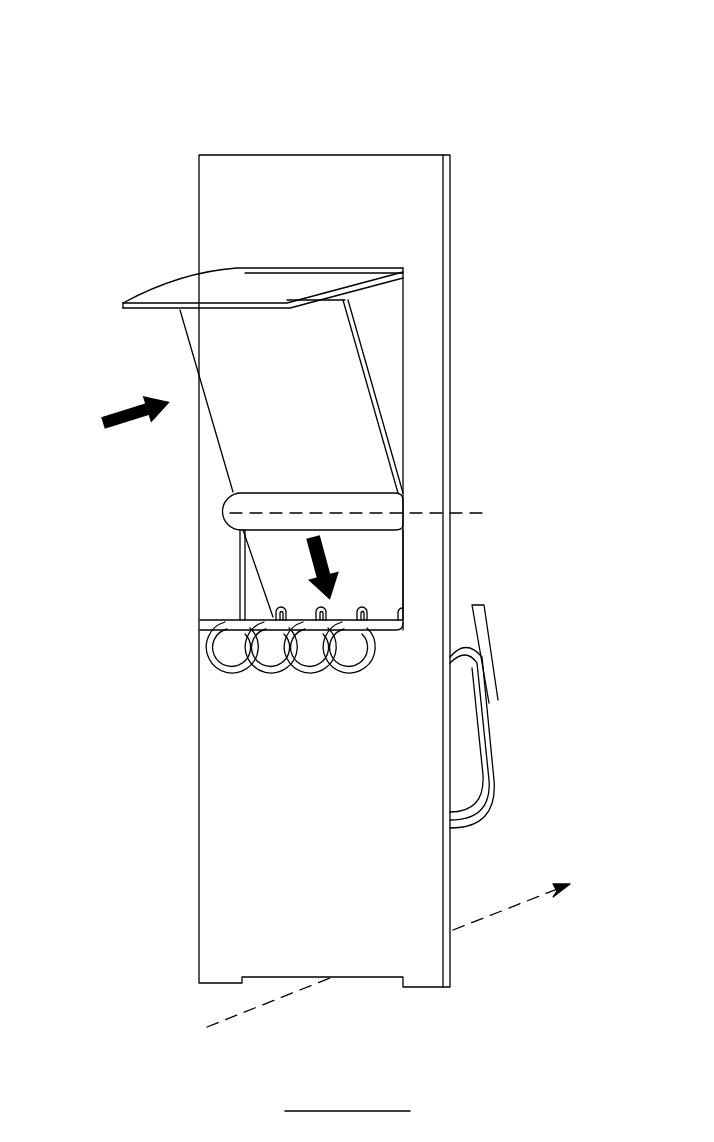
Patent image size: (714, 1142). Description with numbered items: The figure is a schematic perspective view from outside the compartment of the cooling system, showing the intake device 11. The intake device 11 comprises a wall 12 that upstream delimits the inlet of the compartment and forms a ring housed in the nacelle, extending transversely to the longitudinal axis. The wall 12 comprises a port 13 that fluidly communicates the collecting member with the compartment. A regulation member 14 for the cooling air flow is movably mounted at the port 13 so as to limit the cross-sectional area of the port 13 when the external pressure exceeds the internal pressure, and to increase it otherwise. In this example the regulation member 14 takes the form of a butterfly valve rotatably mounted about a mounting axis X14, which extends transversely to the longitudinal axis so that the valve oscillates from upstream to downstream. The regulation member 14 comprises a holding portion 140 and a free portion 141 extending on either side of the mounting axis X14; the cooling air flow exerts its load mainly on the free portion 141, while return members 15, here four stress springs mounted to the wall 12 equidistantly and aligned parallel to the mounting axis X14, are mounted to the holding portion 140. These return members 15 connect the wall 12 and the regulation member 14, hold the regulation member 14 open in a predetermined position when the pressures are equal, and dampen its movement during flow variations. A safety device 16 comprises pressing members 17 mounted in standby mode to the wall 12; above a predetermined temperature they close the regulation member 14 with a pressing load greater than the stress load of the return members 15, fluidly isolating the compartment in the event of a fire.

The intake device 11 is at (212, 104).
The wall 12 is at (330, 904).
The port 13 is at (377, 333).
The regulation member 14 is at (100, 473).
The free portion 141 is at (218, 455).
The holding portion 140 is at (245, 573).
The mounting axis X14 is at (395, 517).
The return members 15 is at (263, 677).
The safety device 16 is at (502, 747).
The pressing members 17 is at (490, 703).